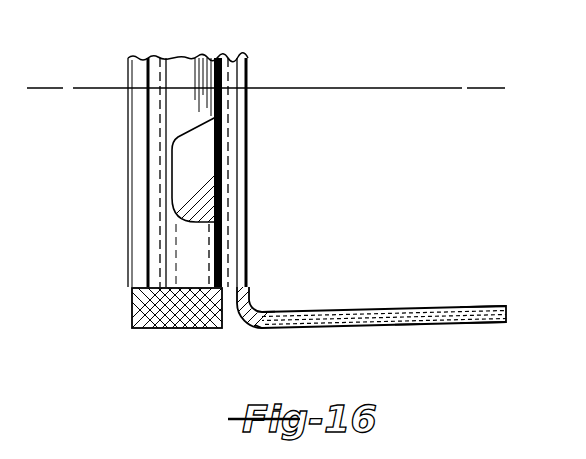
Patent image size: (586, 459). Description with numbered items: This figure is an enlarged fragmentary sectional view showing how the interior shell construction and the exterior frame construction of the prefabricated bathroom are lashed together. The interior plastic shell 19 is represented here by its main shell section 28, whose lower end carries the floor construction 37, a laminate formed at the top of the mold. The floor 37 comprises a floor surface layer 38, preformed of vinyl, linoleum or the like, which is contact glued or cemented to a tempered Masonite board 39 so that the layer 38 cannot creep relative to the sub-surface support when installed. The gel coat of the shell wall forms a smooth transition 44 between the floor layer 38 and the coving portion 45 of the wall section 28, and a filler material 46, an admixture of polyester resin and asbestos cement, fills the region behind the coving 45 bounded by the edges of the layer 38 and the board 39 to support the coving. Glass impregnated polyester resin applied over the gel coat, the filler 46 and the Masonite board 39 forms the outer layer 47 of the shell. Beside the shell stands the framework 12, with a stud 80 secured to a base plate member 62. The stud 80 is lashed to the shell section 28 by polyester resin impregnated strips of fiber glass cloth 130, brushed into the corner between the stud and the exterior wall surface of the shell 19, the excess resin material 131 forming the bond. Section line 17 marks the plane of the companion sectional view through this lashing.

The framework 12 is at (130, 255).
The section line 17- 17 is at (48, 84).
The interior plastic shell 19 is at (250, 210).
The main shell section 28 is at (239, 257).
The floor construction 37 is at (378, 298).
The floor surface layer 38 is at (470, 307).
The tempered Masonite board 39 is at (477, 325).
The transition 44 is at (268, 312).
The coving portion 45 is at (256, 309).
The filler material 46 is at (252, 327).
The outer layer 47 is at (413, 327).
The base plate member 62 is at (131, 307).
The stud 80 is at (133, 205).
The polyester resin impregnated strips of fiber glass cloth 130 is at (234, 128).
The excess resin material 131 is at (190, 139).